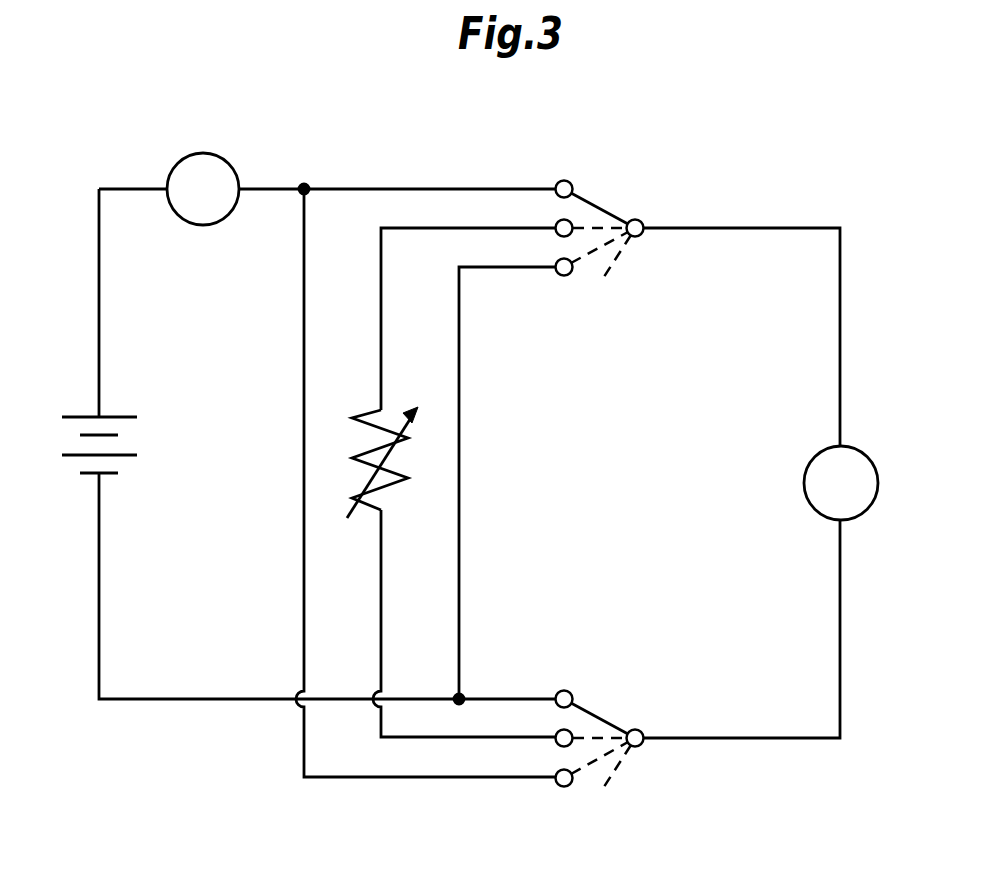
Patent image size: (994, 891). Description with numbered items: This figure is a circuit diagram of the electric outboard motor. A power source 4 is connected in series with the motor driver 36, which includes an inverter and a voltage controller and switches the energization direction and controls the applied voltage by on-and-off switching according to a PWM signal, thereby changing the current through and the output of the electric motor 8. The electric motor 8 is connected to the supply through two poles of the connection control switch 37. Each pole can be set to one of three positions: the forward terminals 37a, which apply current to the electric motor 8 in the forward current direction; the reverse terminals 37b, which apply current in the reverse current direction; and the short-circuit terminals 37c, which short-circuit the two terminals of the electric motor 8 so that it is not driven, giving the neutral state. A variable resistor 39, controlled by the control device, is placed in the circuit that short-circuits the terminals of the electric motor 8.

The battery 4 is at (80, 417).
The electric motor 8 is at (862, 452).
The motor driver 36 is at (224, 157).
The connection control switch 37 is at (610, 206).
The forward terminals 37a is at (563, 180).
The reverse terminals 37b is at (564, 276).
The short-circuit terminals 37c is at (560, 220).
The variable resistor 39 is at (372, 413).